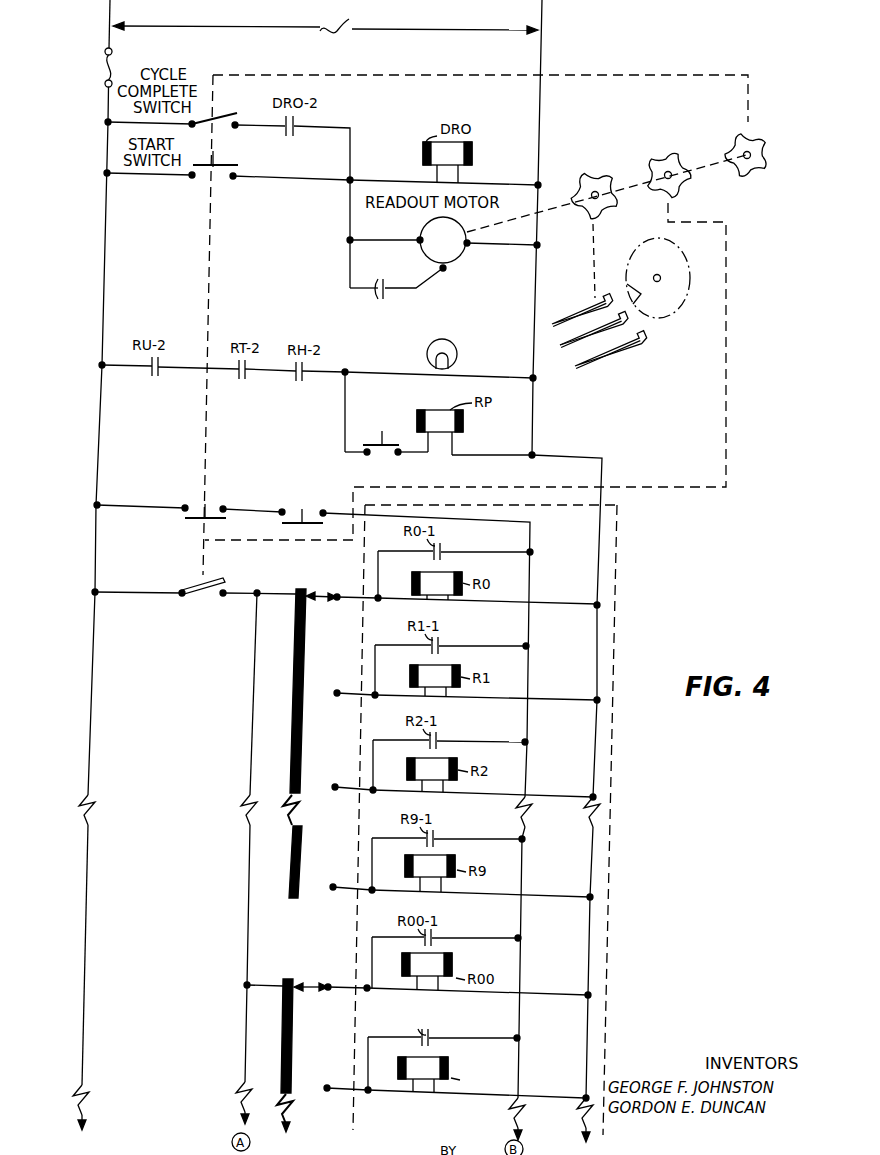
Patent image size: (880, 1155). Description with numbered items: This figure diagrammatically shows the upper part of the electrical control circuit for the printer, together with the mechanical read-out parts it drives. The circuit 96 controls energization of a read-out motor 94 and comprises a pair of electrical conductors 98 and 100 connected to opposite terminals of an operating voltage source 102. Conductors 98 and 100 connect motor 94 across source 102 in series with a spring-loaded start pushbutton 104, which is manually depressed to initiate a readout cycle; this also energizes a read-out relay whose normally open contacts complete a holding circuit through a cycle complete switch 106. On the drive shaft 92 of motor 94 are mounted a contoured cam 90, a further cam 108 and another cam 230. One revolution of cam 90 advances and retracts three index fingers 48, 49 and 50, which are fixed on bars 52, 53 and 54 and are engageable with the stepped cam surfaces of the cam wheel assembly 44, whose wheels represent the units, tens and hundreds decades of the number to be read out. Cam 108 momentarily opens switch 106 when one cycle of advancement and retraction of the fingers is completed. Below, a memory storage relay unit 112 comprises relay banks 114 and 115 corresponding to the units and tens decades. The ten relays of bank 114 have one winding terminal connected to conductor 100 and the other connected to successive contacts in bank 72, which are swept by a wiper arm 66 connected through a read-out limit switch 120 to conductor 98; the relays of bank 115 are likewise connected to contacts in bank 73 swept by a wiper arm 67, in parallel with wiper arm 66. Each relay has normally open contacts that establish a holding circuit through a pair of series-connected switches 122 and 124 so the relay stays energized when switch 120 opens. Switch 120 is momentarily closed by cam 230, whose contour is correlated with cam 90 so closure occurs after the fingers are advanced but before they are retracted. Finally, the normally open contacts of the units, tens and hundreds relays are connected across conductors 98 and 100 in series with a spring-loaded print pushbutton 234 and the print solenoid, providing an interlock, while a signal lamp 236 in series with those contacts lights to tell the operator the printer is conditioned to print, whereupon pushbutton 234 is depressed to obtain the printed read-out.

The cam wheel assembly 44 is at (658, 301).
The index finger 48 is at (640, 350).
The index finger 49 is at (658, 278).
The index finger 50 is at (595, 328).
The bar 52 is at (589, 356).
The bar 53 is at (574, 350).
The bar 54 is at (578, 320).
The wiper arm 66 is at (324, 592).
The wiper arm 67 is at (315, 987).
The contact bank 72 is at (337, 601).
The contact bank 73 is at (329, 992).
The cam 90 is at (601, 171).
The drive shaft 92 is at (556, 205).
The read-out motor 94 is at (461, 262).
The circuit 96 is at (552, 34).
The electrical conductor 98 is at (107, 101).
The electrical conductor 100 is at (543, 64).
The operating voltage source 102 is at (325, 19).
The start pushbutton 104 is at (229, 166).
The cycle complete switch 106 is at (215, 119).
The cam 108 is at (763, 147).
The memory storage relay unit 112 is at (638, 581).
The relay bank 114 is at (514, 504).
The relay bank 115 is at (392, 1003).
The read-out limit switch 120 is at (203, 599).
The switch 122 is at (198, 523).
The switch 124 is at (296, 518).
The cam 230 is at (666, 153).
The print pushbutton 234 is at (392, 442).
The signal lamp 236 is at (458, 348).